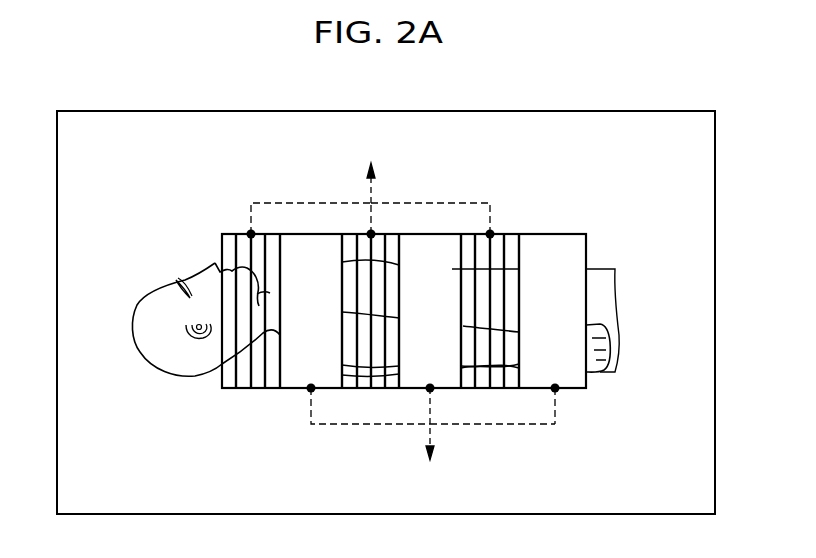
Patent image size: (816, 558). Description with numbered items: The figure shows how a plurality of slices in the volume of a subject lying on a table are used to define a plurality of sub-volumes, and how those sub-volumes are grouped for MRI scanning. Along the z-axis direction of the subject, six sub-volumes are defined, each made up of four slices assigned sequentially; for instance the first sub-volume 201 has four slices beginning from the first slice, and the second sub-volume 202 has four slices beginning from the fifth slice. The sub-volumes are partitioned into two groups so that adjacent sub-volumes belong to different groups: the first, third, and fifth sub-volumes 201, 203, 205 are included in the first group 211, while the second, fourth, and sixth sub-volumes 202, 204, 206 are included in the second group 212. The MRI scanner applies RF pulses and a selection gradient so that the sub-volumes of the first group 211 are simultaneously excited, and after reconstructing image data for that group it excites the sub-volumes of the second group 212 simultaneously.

The first sub-volume 201 is at (234, 218).
The second sub-volume 202 is at (295, 392).
The third sub-volume 203 is at (352, 225).
The fourth sub-volume 204 is at (407, 392).
The fifth sub-volume 205 is at (508, 227).
The sixth sub-volume 206 is at (568, 392).
The first group 211 is at (358, 167).
The second group 212 is at (430, 439).